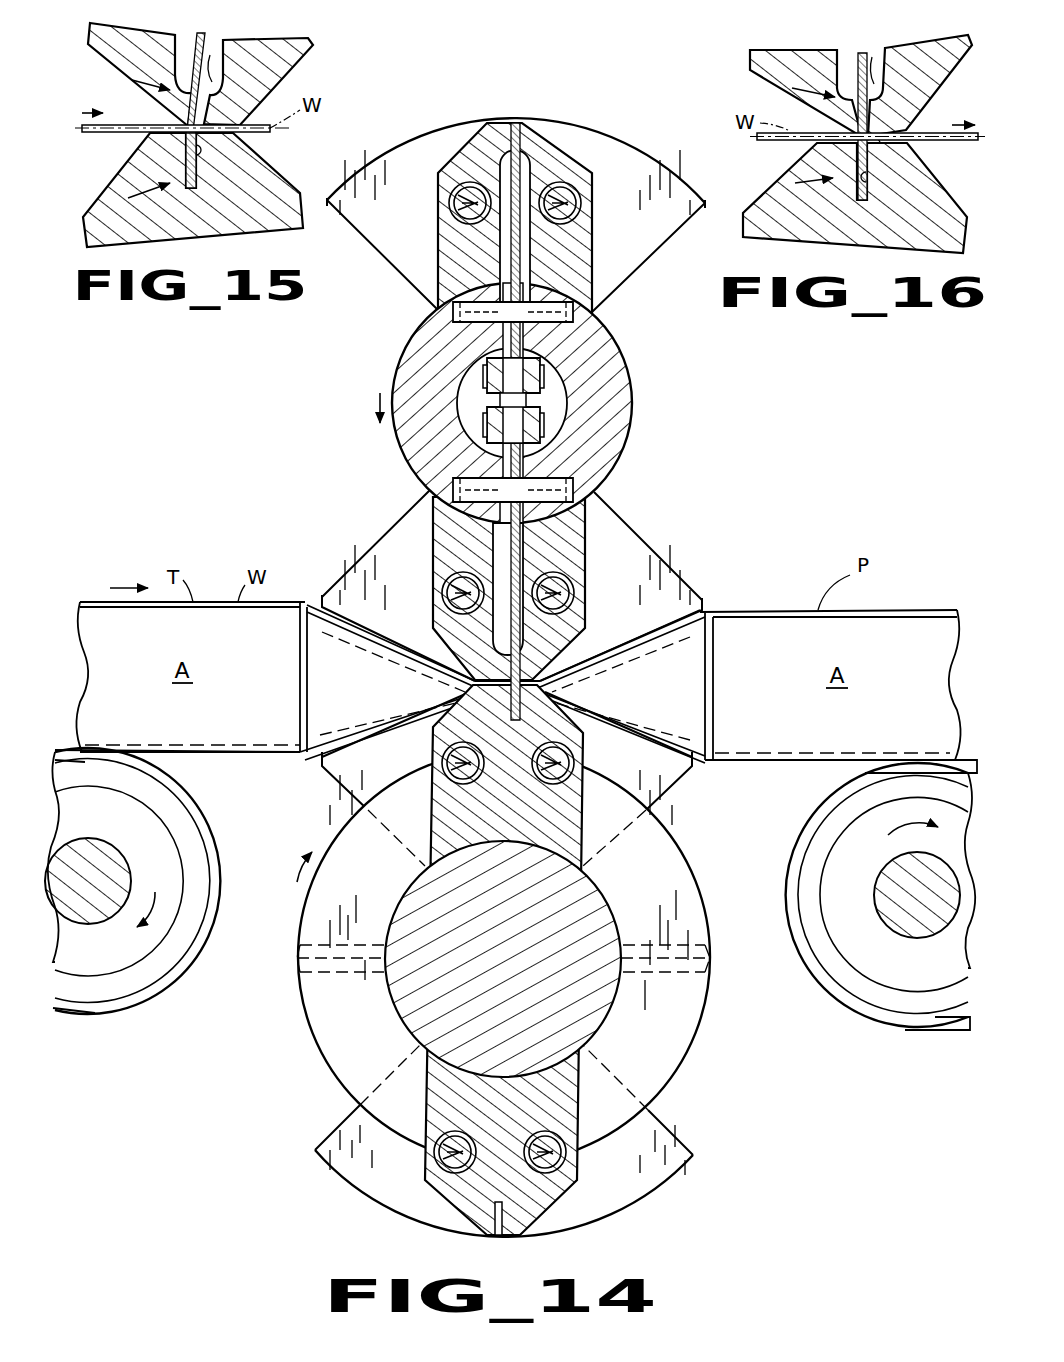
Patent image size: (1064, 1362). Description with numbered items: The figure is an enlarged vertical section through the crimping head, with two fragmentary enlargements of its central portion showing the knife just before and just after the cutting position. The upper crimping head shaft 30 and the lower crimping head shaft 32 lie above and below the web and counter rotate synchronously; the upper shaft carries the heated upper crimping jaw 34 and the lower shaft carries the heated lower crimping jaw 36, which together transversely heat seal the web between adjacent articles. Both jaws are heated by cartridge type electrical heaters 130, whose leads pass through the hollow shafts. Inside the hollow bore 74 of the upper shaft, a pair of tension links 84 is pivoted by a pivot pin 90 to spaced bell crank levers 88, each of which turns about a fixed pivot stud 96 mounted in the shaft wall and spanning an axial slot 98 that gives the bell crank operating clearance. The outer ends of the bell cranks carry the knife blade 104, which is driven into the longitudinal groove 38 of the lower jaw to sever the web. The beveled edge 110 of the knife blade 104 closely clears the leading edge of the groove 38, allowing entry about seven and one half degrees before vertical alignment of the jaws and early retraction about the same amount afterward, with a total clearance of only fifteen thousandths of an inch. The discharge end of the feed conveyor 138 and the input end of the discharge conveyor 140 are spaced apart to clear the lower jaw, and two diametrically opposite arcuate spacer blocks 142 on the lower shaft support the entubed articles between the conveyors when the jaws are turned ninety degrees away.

In FIG. 14, the upper crimping head shaft 30 is at (632, 398).
In FIG. 14, the lower crimping head shaft 32 is at (405, 1007).
In FIG. 14, the upper crimping jaw 34 is at (548, 143).
In FIG. 15, the upper crimping jaw 34 is at (300, 60).
In FIG. 16, the upper crimping jaw 34 is at (798, 105).
In FIG. 14, the lower crimping jaw 36 is at (442, 740).
In FIG. 15, the lower crimping jaw 36 is at (132, 168).
In FIG. 16, the lower crimping jaw 36 is at (800, 163).
In FIG. 14, the longitudinal groove 38 is at (522, 697).
In FIG. 15, the longitudinal groove 38 is at (200, 152).
In FIG. 16, the longitudinal groove 38 is at (869, 178).
In FIG. 14, the hollow bore 74 is at (458, 380).
In FIG. 14, the tension links 84 is at (490, 360).
In FIG. 14, the bell crank lever 88 is at (505, 331).
In FIG. 14, the pivot pin 90 is at (545, 383).
In FIG. 14, the fixed pivot stud 96 is at (576, 312).
In FIG. 14, the axial slot 98 is at (500, 236).
In FIG. 15, the axial slot 98 is at (210, 55).
In FIG. 16, the axial slot 98 is at (872, 57).
In FIG. 14, the knife blade 104 is at (522, 232).
In FIG. 15, the knife blade 104 is at (203, 33).
In FIG. 16, the knife blade 104 is at (853, 58).
In FIG. 15, the beveled edge 110 is at (207, 133).
In FIG. 16, the beveled edge 110 is at (873, 142).
In FIG. 14, the cartridge type electrical heater 130 is at (456, 200).
In FIG. 14, the feed conveyor 138 is at (167, 777).
In FIG. 14, the discharge conveyor 140 is at (855, 782).
In FIG. 14, the arcuate spacer block 142 is at (355, 822).